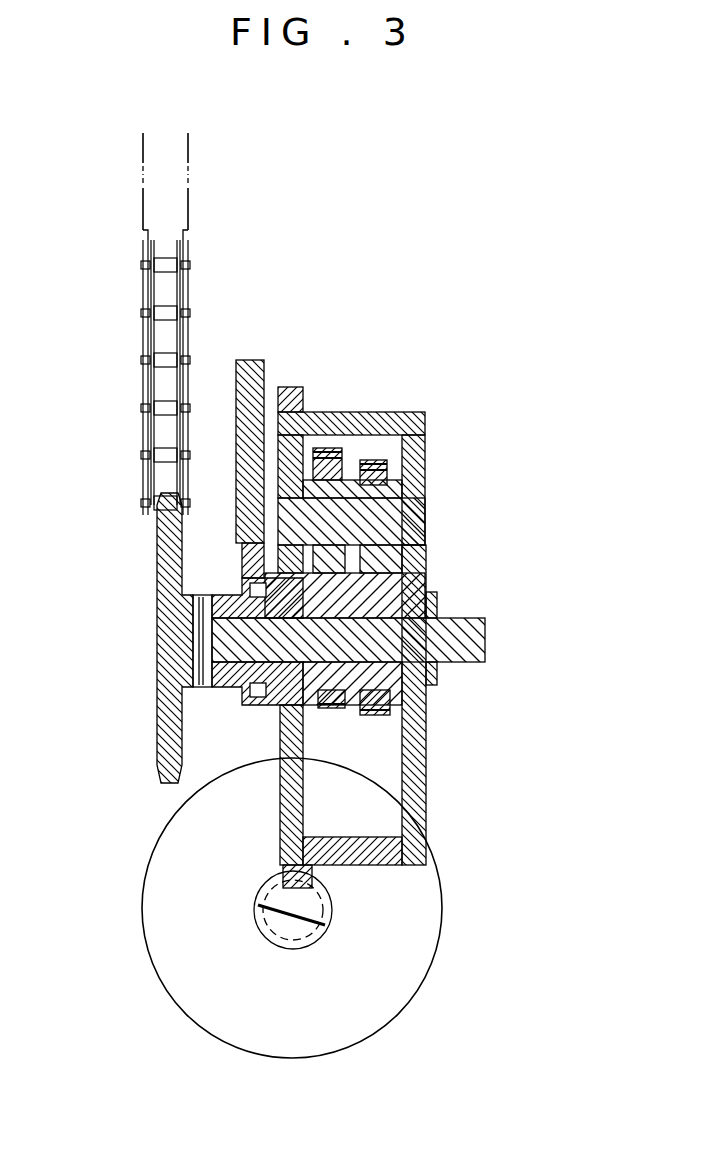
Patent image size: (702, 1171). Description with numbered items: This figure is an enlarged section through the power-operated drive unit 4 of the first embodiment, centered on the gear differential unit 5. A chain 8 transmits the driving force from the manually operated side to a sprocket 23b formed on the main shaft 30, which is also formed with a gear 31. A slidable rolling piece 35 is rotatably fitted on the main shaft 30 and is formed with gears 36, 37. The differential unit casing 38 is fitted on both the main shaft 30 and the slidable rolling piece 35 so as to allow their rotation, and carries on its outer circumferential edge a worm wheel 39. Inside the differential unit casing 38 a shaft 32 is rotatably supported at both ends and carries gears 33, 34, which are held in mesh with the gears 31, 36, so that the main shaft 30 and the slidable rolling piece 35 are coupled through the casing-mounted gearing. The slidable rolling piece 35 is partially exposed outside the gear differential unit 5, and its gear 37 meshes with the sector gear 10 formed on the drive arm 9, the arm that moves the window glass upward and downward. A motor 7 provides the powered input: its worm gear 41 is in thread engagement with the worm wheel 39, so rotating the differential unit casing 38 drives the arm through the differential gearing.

The chain 8 is at (150, 333).
The drive arm 9 is at (245, 437).
The sector gear 10 is at (243, 567).
The worm wheel 39 is at (289, 385).
The shaft 32 is at (410, 518).
The gear 34 is at (330, 455).
The gear 33 is at (380, 465).
The slidable rolling piece 35 is at (240, 596).
The gear 37 is at (245, 696).
The main shaft 30 is at (470, 637).
The sprocket 23b is at (160, 777).
The gear 36 is at (328, 710).
The gear 31 is at (372, 716).
The gear differential unit 5 is at (443, 710).
The power-operated drive unit 4 is at (287, 832).
The differential unit casing 38 is at (365, 852).
The worm gear 41 is at (262, 928).
The motor 7 is at (430, 963).